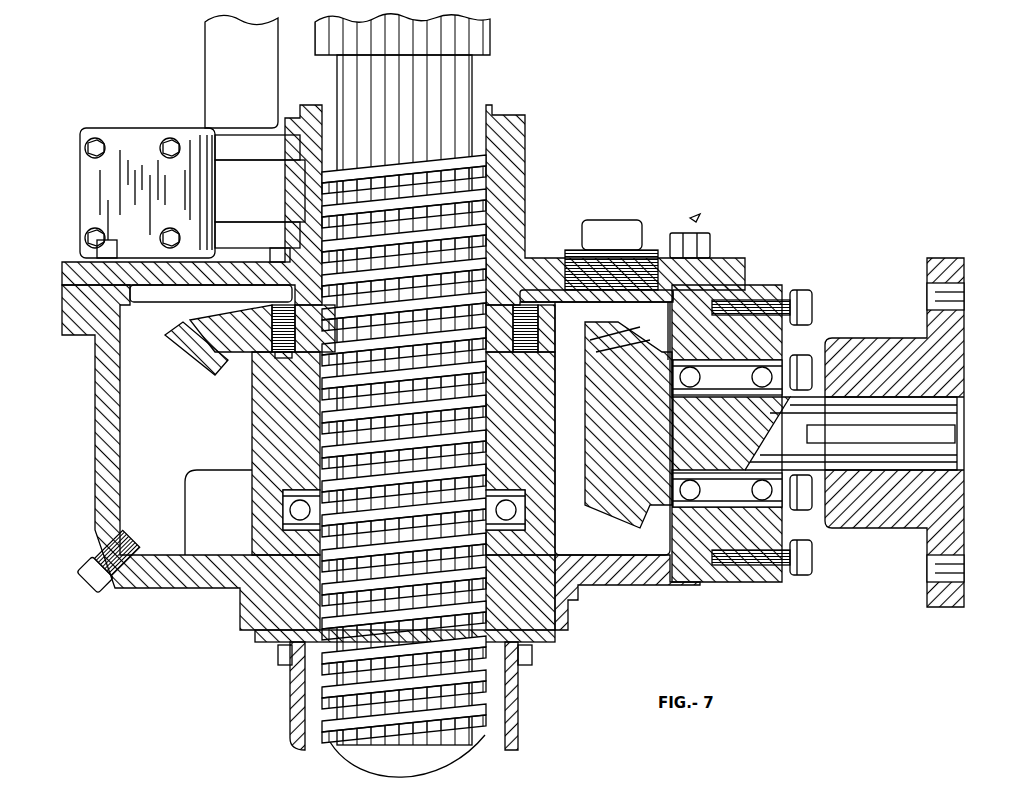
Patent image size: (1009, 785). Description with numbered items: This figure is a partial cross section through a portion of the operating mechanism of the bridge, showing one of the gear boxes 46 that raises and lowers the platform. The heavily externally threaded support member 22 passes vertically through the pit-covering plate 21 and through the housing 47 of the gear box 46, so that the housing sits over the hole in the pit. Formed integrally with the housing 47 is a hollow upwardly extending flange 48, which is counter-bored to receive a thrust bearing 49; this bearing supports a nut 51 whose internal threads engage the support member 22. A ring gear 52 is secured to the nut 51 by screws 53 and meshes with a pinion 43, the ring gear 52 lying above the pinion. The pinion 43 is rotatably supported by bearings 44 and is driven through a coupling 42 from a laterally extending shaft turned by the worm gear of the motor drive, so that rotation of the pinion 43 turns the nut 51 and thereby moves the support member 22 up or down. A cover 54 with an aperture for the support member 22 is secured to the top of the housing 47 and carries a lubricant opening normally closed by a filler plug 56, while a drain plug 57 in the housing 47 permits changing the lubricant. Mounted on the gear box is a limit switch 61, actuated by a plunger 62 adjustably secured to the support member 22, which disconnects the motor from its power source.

The plate 21 is at (731, 79).
The support member 22 is at (456, 70).
The coupling 42 is at (908, 432).
The pinion 43 is at (622, 527).
The bearings 44 is at (770, 360).
The gear box 46 is at (768, 278).
The housing 47 is at (688, 582).
The flange 48 is at (265, 450).
The thrust bearing 49 is at (285, 512).
The nut 51 is at (258, 366).
The ring gear 52 is at (176, 330).
The screws 53 is at (276, 318).
The cover 54 is at (510, 174).
The filler plug 56 is at (622, 232).
The drain plug 57 is at (94, 568).
The limit switch 61 is at (102, 191).
The plunger 62 is at (240, 65).